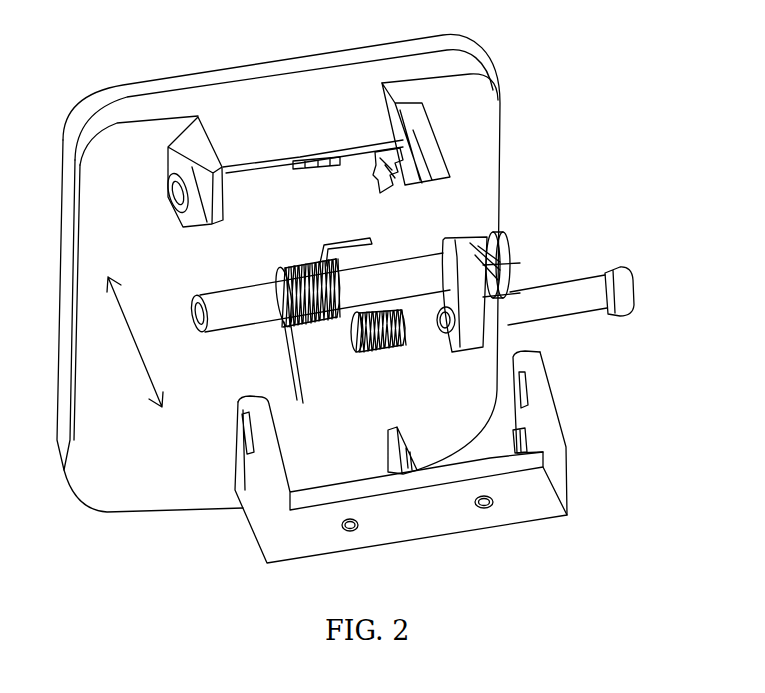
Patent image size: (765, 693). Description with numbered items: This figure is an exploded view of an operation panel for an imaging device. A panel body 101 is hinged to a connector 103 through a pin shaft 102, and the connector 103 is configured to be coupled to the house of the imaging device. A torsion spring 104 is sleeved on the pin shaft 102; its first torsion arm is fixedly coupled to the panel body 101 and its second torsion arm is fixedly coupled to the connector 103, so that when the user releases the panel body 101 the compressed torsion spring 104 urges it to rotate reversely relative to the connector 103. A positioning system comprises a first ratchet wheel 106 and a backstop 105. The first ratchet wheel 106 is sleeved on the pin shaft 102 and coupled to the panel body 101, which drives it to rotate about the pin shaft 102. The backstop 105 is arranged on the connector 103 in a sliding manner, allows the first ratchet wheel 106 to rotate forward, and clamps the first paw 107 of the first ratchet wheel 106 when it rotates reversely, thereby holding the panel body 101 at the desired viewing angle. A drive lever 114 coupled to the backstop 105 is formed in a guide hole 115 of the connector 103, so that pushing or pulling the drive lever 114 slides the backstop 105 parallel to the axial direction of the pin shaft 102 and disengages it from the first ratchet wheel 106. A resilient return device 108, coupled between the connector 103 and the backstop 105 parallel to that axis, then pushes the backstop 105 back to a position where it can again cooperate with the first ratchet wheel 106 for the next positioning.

The panel body 101 is at (477, 117).
The pin shaft 102 is at (250, 308).
The connector 103 is at (530, 502).
The torsion spring 104 is at (277, 320).
The backstop 105 is at (470, 278).
The first ratchet wheel 106 is at (433, 183).
The first paw 107 is at (380, 183).
The resilient return device 108 is at (380, 352).
The drive lever 114 is at (560, 308).
The guide hole 115 is at (517, 430).